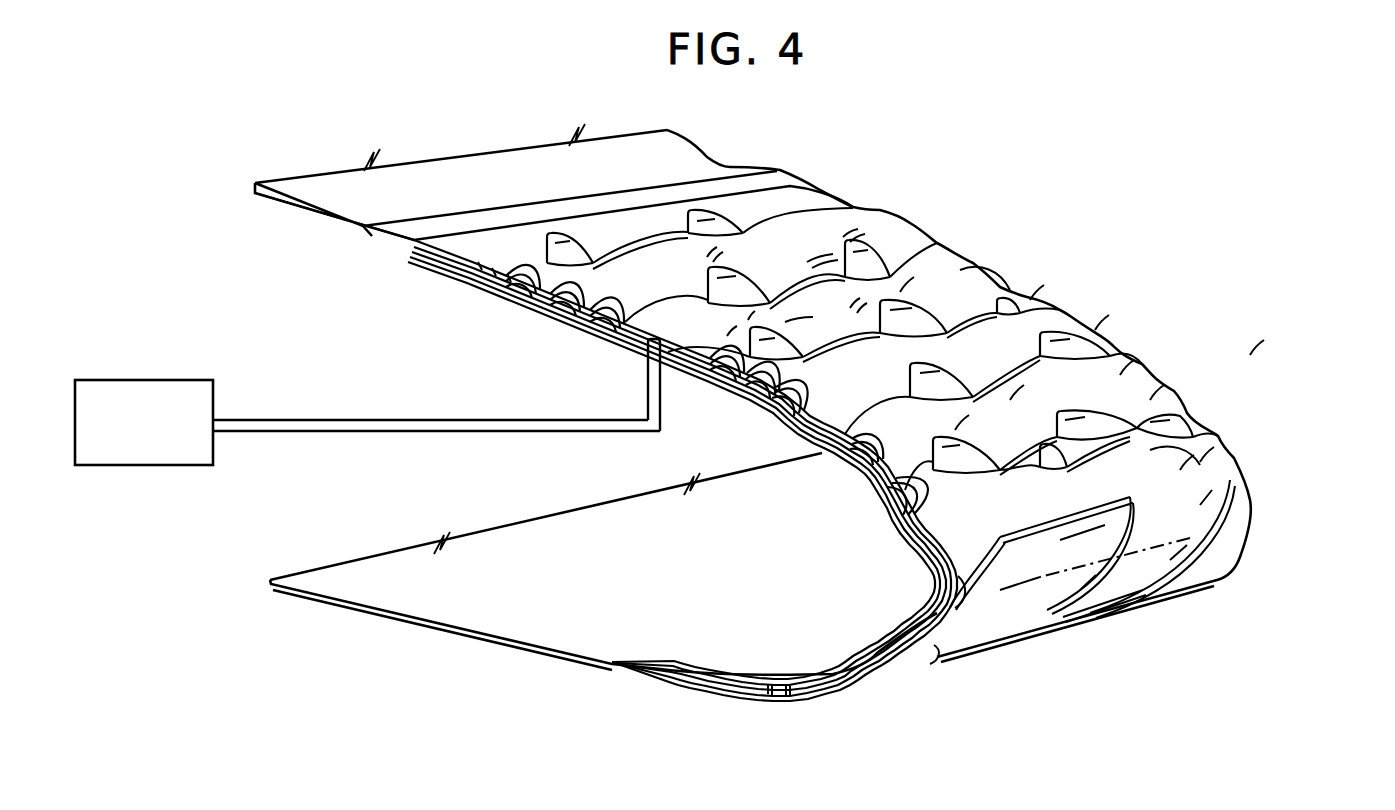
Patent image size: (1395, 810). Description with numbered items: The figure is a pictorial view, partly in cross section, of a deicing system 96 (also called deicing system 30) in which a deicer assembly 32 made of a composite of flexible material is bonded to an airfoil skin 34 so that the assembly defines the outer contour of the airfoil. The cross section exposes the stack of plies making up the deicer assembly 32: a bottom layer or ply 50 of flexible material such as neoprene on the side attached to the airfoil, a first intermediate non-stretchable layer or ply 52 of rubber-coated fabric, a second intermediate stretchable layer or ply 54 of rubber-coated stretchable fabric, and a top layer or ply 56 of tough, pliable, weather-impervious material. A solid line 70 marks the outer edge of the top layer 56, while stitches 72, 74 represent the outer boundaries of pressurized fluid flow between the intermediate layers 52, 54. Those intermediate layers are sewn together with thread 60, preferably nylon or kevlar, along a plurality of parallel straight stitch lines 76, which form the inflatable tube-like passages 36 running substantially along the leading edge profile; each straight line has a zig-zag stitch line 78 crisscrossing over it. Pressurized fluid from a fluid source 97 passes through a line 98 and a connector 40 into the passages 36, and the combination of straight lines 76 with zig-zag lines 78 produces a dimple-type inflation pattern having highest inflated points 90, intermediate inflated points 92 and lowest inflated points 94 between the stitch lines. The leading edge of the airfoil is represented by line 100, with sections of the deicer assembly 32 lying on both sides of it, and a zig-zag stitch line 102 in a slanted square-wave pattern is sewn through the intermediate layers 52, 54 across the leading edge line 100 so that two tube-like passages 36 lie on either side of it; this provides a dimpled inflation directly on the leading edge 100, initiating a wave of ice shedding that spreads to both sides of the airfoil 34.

The deicing system 30 is at (990, 245).
The deicer assembly 32 is at (1137, 382).
The airfoil skin 34 is at (495, 172).
The tube-like passages 36 is at (550, 298).
The connector 40 is at (647, 344).
The bottom layer or ply 50 is at (420, 250).
The first intermediate non-stretchable layer or ply 52 is at (458, 262).
The second intermediate stretchable layer or ply 54 is at (840, 430).
The top layer or ply 56 is at (830, 702).
The thread 60 is at (880, 500).
The solid line 70 is at (678, 680).
The dashed stitch line 72 is at (790, 693).
The dashed stitch line 74 is at (763, 690).
The parallel straight stitch lines 76 is at (510, 292).
The zig-zag stitch lines 78 is at (775, 398).
The highest inflated points 90 is at (793, 218).
The intermediate inflated points 92 is at (912, 300).
The lowest inflated points 94 is at (733, 237).
The deicing system 96 is at (920, 172).
The fluid source 97 is at (155, 385).
The line 98 is at (330, 427).
The leading edge line 100 is at (1273, 515).
The zig-zag stitch line 102 is at (938, 620).